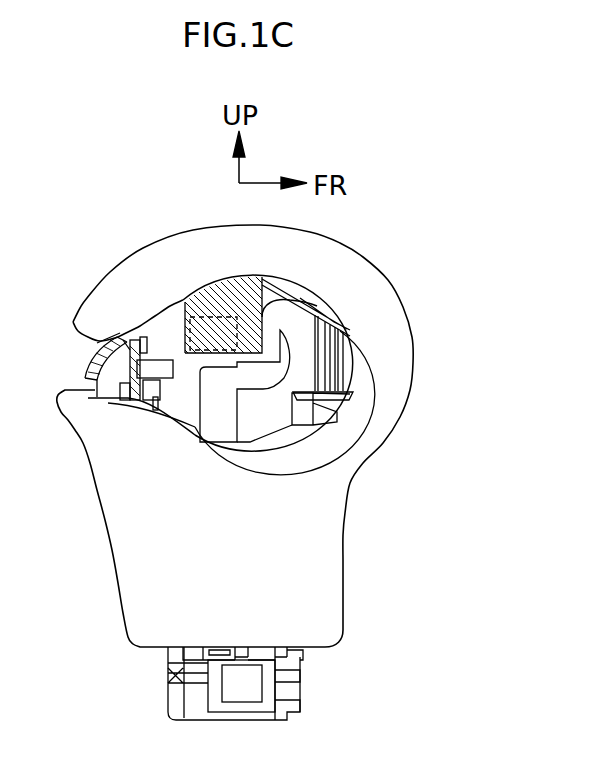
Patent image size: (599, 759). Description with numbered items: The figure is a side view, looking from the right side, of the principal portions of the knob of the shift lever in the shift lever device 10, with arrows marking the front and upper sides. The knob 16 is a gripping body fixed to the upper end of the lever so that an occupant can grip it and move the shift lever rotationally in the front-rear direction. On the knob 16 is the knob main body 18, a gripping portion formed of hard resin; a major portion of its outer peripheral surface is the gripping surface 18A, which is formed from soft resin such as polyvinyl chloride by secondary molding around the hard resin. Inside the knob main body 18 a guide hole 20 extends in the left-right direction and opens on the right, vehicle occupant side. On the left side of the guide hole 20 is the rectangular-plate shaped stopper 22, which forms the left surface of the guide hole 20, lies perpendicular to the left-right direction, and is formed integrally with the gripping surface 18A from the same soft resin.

The shift lever device 10 is at (123, 230).
The knob 16 is at (112, 571).
The knob main body 18 is at (346, 256).
The gripping surface 18A is at (327, 547).
The guide hole 20 is at (303, 357).
The stopper 22 is at (300, 300).